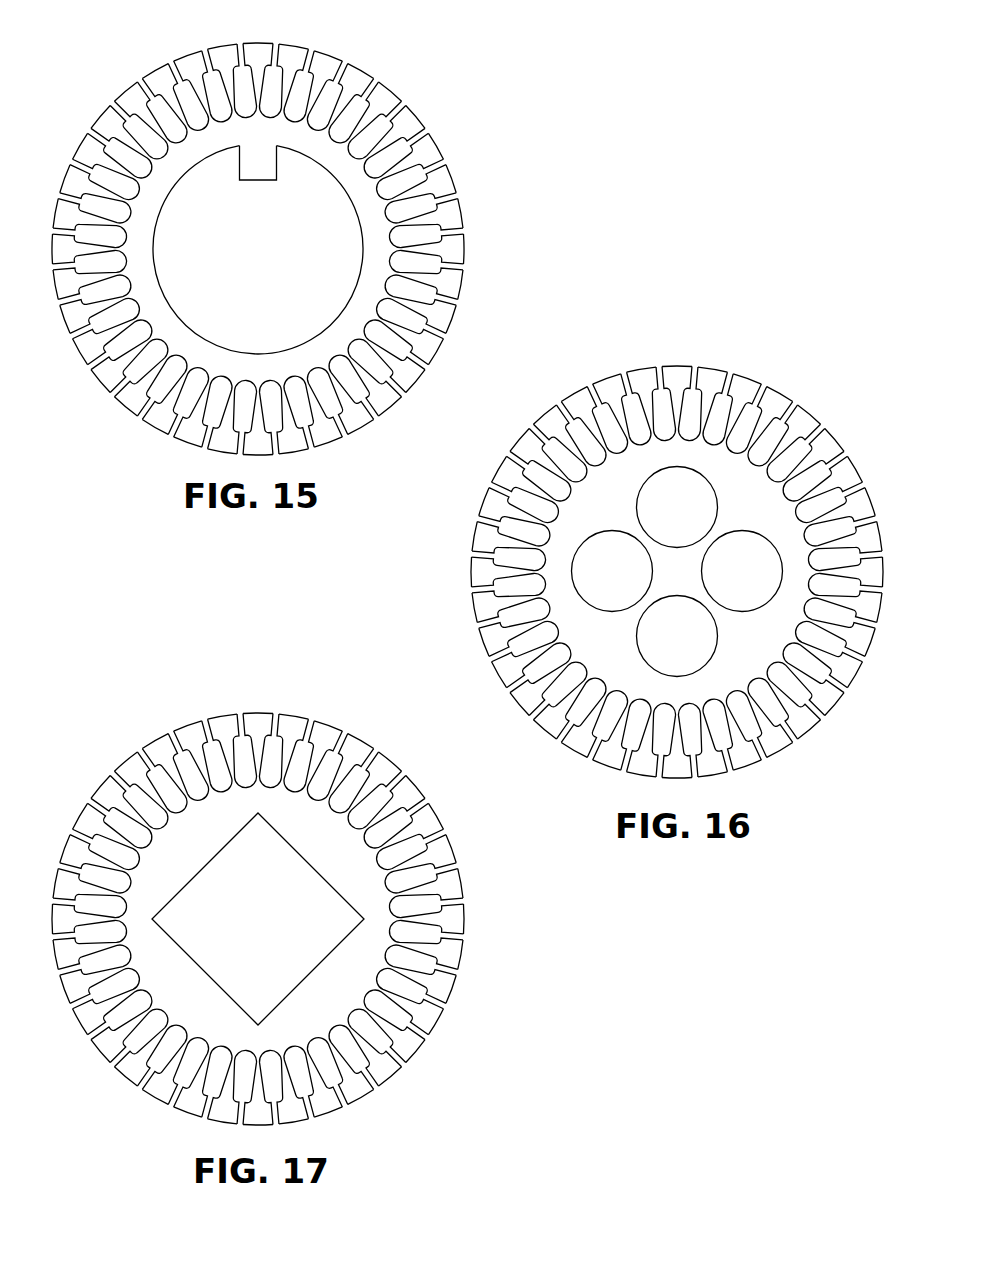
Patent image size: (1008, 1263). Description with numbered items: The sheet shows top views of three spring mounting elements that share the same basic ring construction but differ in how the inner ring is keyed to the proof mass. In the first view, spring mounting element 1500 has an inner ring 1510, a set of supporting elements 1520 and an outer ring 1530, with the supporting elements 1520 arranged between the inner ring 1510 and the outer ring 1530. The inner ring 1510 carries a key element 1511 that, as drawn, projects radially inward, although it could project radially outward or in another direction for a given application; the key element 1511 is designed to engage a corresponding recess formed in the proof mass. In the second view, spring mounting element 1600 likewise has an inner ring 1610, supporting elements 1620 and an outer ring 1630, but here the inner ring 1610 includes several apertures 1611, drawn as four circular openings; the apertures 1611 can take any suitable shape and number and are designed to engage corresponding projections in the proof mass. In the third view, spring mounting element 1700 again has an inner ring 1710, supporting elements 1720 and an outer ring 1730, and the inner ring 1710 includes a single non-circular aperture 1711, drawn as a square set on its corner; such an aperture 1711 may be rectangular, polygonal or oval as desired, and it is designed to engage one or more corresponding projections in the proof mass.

In FIG. 15, the spring mounting element 1500 is at (298, 240).
In FIG. 15, the outer ring 1530 is at (440, 132).
In FIG. 15, the supporting elements 1520 is at (182, 382).
In FIG. 15, the inner ring 1510 is at (258, 250).
In FIG. 15, the key element 1511 is at (256, 170).
In FIG. 16, the spring mounting element 1600 is at (656, 538).
In FIG. 16, the outer ring 1630 is at (598, 370).
In FIG. 16, the supporting elements 1620 is at (675, 728).
In FIG. 16, the inner ring 1610 is at (605, 565).
In FIG. 16, the apertures 1611 is at (653, 519).
In FIG. 17, the spring mounting element 1700 is at (292, 881).
In FIG. 17, the outer ring 1730 is at (290, 710).
In FIG. 17, the supporting elements 1720 is at (362, 1042).
In FIG. 17, the inner ring 1710 is at (342, 919).
In FIG. 17, the non-circular aperture 1711 is at (236, 931).